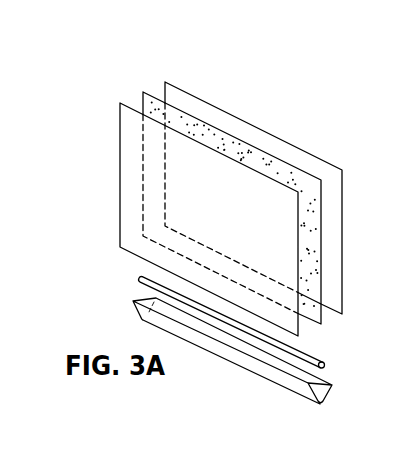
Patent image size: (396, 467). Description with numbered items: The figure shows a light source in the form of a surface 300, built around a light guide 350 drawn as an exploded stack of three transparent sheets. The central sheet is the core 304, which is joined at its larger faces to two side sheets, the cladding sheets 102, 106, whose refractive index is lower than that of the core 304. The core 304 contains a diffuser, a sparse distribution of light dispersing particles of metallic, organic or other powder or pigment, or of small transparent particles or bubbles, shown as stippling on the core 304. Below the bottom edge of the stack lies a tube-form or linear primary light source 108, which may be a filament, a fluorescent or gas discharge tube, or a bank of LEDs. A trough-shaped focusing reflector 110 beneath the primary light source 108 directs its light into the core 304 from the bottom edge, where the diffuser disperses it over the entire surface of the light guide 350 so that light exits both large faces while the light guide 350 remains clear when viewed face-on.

The surface light source 300 is at (279, 96).
The light guide 350 is at (127, 25).
The cladding sheet 102 is at (163, 78).
The core 304 is at (138, 88).
The cladding sheet 106 is at (112, 102).
The primary light source 108 is at (133, 270).
The focusing reflector 110 is at (133, 310).